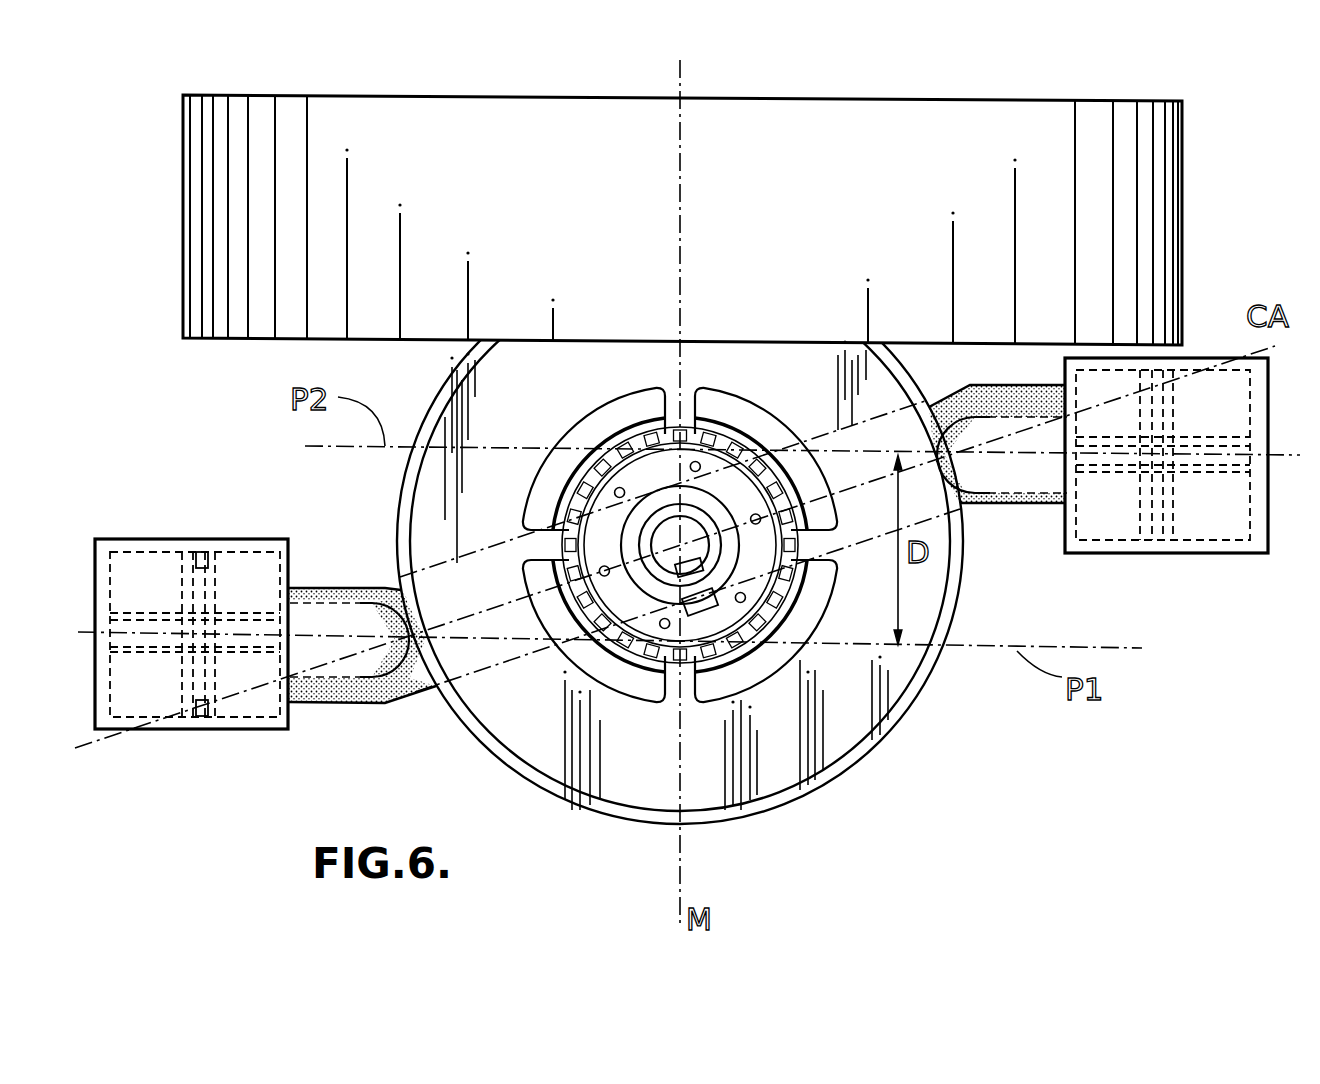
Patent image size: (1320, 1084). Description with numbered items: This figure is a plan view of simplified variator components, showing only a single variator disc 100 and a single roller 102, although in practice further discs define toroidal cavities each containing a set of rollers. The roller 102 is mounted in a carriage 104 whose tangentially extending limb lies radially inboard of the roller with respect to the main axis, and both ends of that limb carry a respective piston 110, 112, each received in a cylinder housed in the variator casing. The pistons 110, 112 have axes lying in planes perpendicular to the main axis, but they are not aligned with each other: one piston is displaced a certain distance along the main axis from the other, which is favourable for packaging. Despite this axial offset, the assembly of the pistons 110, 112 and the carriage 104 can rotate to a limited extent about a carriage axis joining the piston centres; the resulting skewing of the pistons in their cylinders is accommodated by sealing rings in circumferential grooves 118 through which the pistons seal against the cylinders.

The variator disc 100 is at (632, 247).
The roller 102 is at (678, 825).
The carriage 104 is at (412, 712).
The piston 110 is at (218, 567).
The piston 112 is at (1173, 545).
The circumferential grooves 118 is at (198, 707).